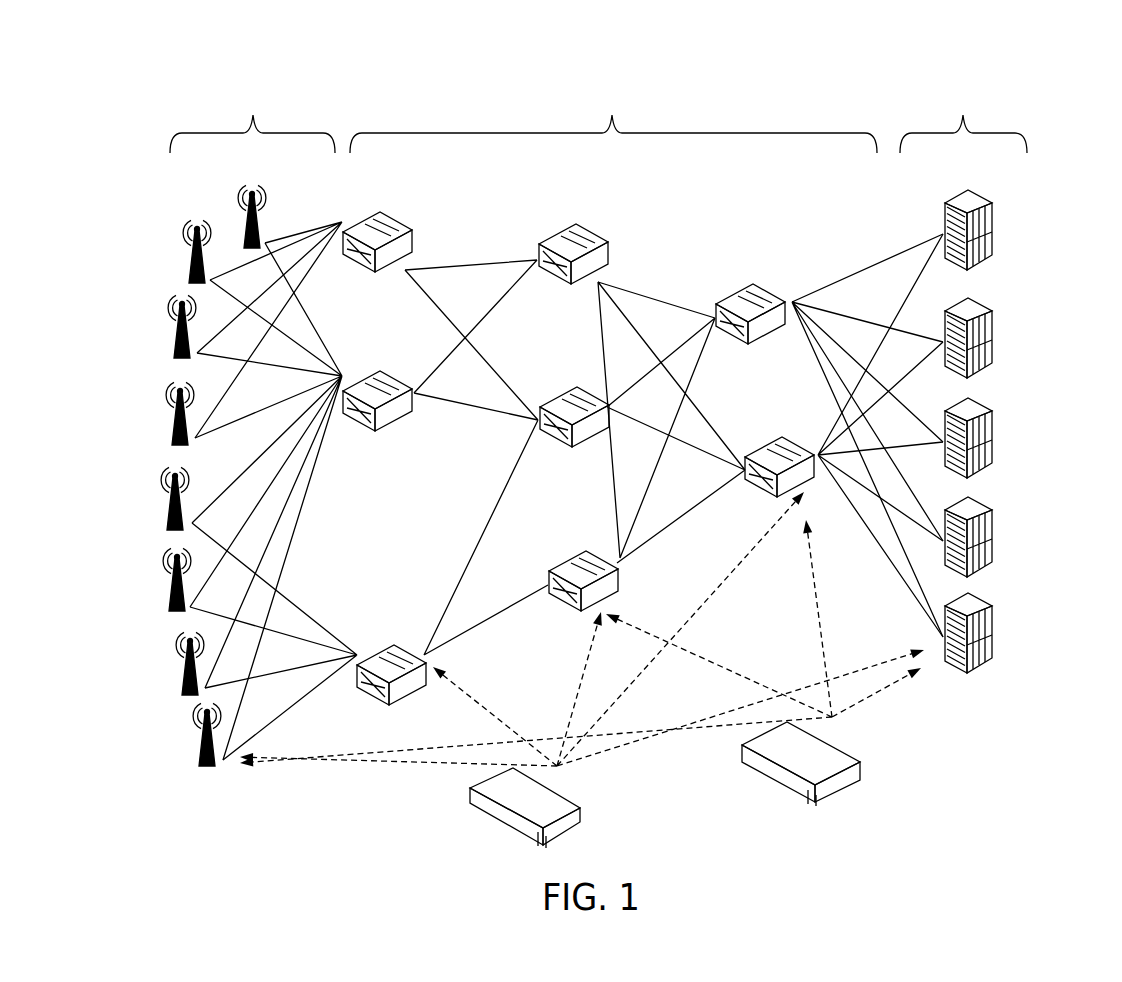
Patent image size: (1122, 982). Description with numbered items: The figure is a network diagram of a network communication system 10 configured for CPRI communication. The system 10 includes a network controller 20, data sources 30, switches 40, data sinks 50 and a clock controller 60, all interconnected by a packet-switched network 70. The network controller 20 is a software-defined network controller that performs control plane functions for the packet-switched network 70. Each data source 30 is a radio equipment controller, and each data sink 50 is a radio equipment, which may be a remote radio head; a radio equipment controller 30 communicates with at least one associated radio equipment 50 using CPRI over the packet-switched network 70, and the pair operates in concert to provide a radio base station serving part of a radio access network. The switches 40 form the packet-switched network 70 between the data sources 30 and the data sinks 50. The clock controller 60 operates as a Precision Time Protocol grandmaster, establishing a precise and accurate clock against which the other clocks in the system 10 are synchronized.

The network communication system 10 is at (1064, 107).
The network controller 20 is at (567, 798).
The data sources 30 is at (995, 345).
The switches 40 is at (373, 368).
The data sinks 50 is at (188, 265).
The clock controller 60 is at (852, 755).
The packet-switched network 70 is at (646, 344).